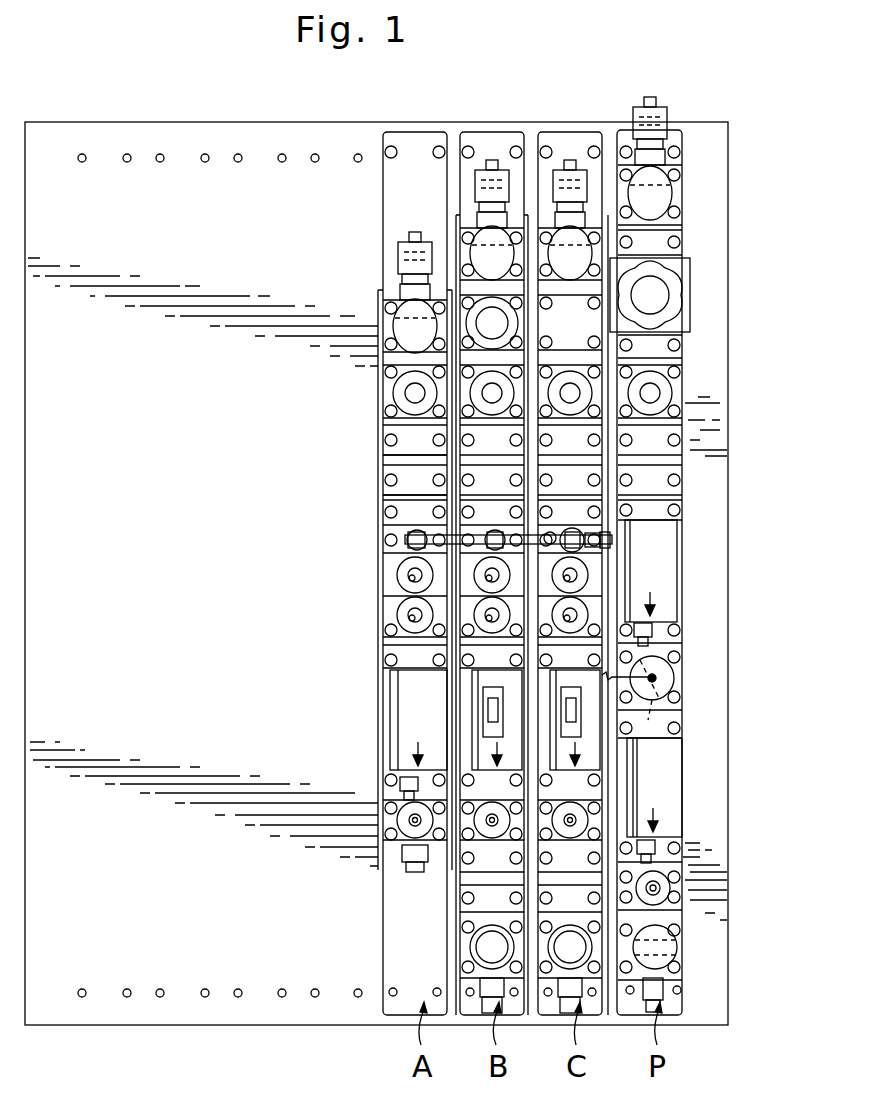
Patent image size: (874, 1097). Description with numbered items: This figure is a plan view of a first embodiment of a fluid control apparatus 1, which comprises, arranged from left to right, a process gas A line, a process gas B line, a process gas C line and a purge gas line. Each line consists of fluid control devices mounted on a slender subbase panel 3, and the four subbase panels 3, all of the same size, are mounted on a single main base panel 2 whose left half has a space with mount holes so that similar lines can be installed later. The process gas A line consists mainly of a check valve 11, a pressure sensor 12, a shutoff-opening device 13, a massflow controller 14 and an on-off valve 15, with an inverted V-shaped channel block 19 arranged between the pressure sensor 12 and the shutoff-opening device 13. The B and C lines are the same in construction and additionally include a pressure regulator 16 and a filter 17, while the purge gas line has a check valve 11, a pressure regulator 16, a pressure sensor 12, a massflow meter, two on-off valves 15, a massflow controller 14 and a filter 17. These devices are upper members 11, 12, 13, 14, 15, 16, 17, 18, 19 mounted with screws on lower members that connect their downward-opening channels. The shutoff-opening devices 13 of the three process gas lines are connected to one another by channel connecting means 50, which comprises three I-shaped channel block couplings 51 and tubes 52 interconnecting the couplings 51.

The fluid control apparatus 1 is at (683, 98).
The main base panel 2 is at (718, 650).
The subbase panel 3 is at (418, 137).
The check valve 11 is at (473, 247).
The pressure sensor 12 is at (410, 392).
The shutoff-opening device 13 is at (470, 580).
The massflow controller 14 is at (490, 678).
The on-off valve 15 is at (407, 810).
The pressure regulator 16 is at (478, 292).
The filter 17 is at (488, 947).
The upper member 18 is at (667, 570).
The inverted V-shaped channel block 19 is at (396, 465).
The channel connecting means 50 is at (532, 538).
The I-shaped channel block coupling 51 is at (405, 537).
The tube 52 is at (405, 575).